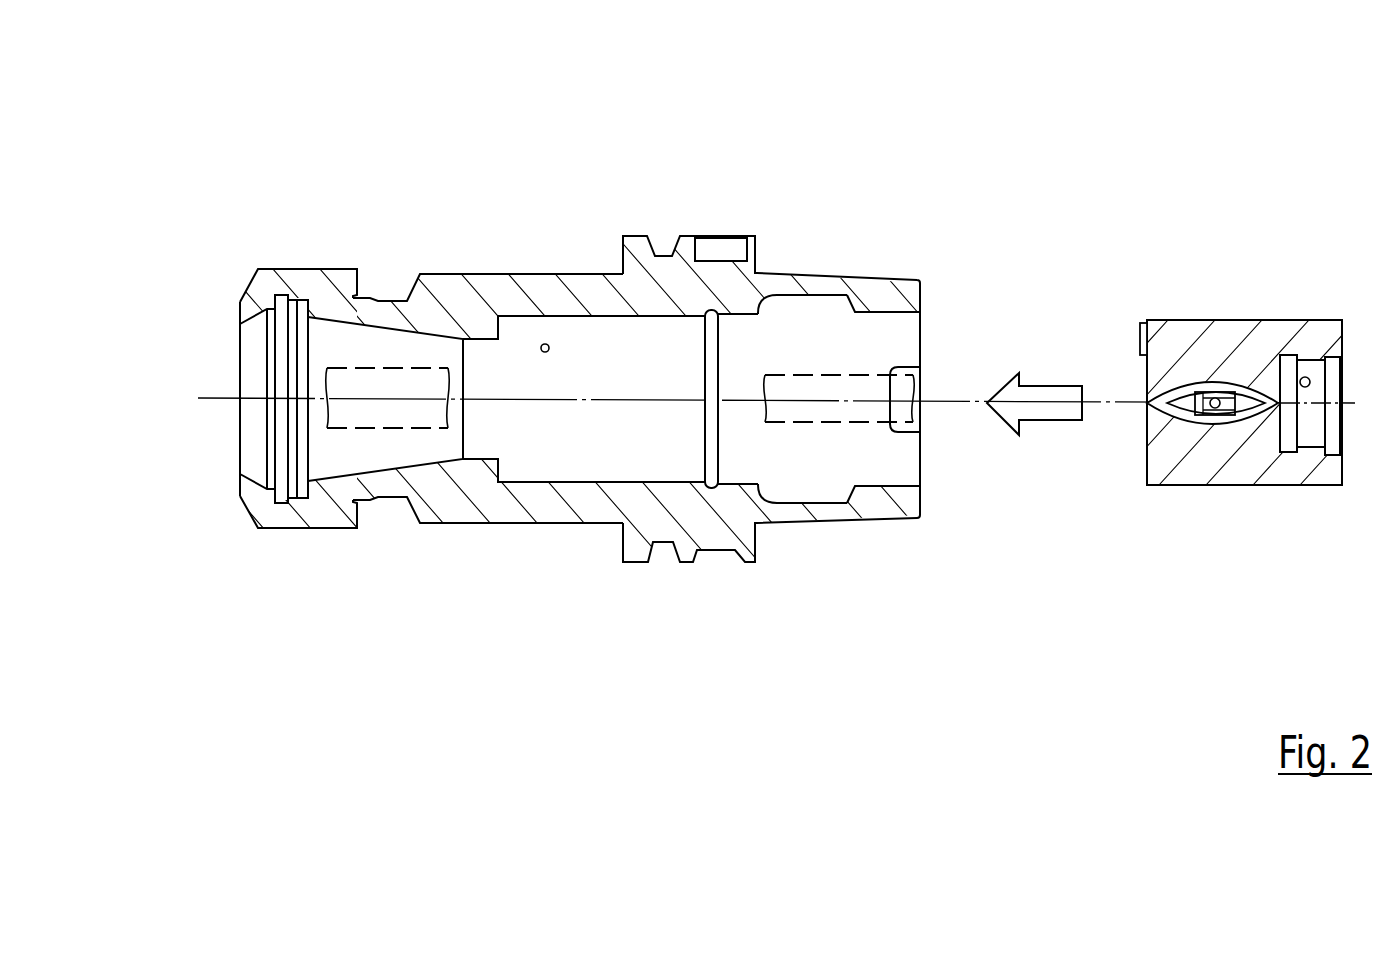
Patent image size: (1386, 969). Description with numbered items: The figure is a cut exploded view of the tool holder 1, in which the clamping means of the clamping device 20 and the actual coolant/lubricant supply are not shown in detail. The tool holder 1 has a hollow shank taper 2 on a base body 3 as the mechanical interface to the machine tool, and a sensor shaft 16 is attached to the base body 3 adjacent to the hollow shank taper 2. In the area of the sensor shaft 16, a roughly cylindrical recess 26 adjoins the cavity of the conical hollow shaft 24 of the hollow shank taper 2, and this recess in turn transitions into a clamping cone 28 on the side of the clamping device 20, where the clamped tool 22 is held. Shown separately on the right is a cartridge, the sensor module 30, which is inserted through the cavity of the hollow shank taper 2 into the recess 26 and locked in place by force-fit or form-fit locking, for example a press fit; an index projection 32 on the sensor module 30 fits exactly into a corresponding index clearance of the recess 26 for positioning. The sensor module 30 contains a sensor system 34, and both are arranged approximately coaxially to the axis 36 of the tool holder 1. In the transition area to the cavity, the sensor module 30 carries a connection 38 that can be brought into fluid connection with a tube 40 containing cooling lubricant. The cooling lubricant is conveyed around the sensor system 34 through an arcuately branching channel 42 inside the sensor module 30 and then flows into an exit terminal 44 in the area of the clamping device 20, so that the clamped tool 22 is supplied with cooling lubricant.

The tool holder 1 is at (546, 188).
The hollow shank taper 2 is at (833, 263).
The base body 3 is at (440, 274).
The sensor shaft 16 is at (553, 530).
The clamping device 20 is at (278, 253).
The clamped tool 22 is at (351, 428).
The conical hollow shaft 24 is at (817, 513).
The cylindrical recess 26 is at (545, 344).
The clamping cone 28 is at (338, 320).
The sensor module 30 is at (1223, 310).
The index projection 32 is at (1140, 328).
The sensor system 34 is at (1210, 390).
The axis 36 is at (630, 399).
The connection 38 is at (1307, 378).
The tube 40 is at (855, 422).
The arcuately branching channel 42 is at (1212, 420).
The exit terminal 44 is at (1147, 397).